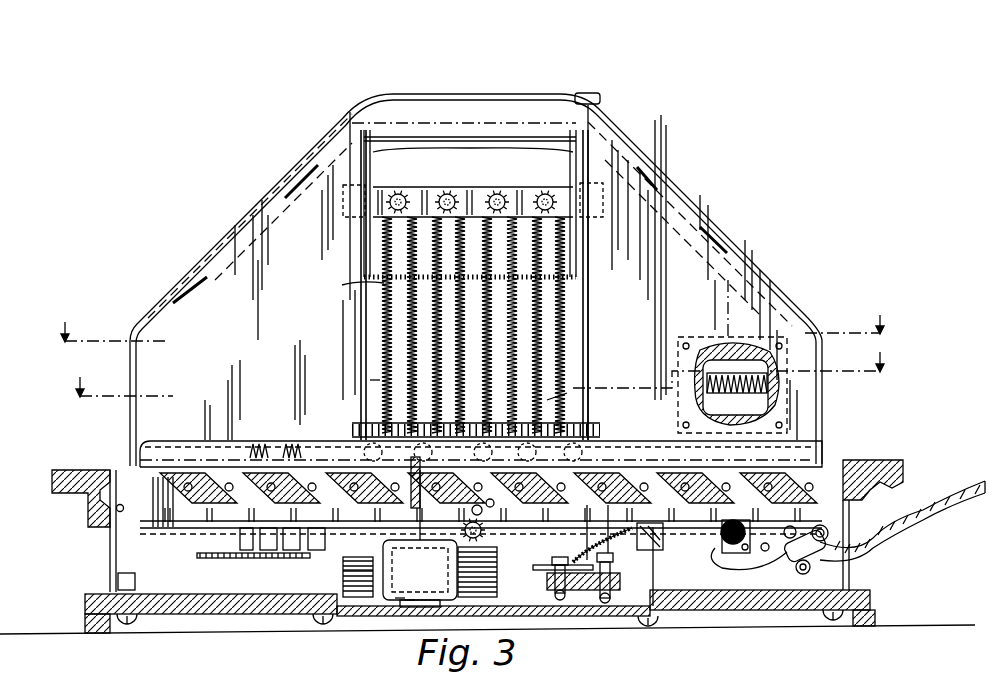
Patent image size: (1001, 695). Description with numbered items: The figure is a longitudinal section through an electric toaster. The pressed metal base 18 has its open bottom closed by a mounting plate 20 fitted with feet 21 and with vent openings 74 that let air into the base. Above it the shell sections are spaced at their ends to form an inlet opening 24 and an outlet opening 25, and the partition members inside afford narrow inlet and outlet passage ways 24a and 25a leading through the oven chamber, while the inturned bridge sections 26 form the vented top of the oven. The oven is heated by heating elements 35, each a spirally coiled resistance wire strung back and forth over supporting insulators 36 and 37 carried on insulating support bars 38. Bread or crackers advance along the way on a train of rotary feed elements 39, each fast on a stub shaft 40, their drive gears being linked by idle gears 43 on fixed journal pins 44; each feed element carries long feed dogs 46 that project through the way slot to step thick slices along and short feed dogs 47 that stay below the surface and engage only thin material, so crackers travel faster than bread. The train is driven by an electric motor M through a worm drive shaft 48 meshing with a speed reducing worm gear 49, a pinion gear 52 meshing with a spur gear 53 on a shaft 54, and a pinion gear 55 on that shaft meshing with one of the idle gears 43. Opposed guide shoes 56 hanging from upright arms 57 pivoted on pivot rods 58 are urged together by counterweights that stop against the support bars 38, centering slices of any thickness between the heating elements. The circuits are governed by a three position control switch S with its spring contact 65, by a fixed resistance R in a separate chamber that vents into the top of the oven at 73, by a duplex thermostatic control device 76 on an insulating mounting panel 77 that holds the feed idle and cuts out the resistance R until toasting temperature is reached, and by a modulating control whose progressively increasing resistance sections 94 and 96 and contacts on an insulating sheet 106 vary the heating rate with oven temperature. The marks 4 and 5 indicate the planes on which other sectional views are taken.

The base 18 is at (110, 547).
The mounting plate 20 is at (90, 607).
The feet 21 is at (85, 622).
The inlet opening 24 is at (667, 158).
The inlet passage way 24a is at (660, 197).
The outlet opening 25 is at (254, 184).
The outlet passage way 25a is at (300, 172).
The bridge sections 26 is at (489, 94).
The vent 73 is at (578, 100).
The heating elements 35 is at (410, 307).
The supporting insulators 36 is at (403, 191).
The supporting insulators 37 is at (547, 400).
The support bars 38 is at (366, 216).
The rotary feed elements 39 is at (795, 485).
The stub shafts 40 is at (771, 485).
The idle gears 43 is at (707, 457).
The journal pins 44 is at (495, 415).
The long feed dogs 46 is at (156, 472).
The short feed dogs 47 is at (603, 500).
The worm drive shaft 48 is at (372, 578).
The worm gear 49 is at (477, 417).
The pinion gear 52 is at (383, 380).
The spur gear 53 is at (500, 532).
The shaft 54 is at (408, 605).
The pinion gear 55 is at (395, 600).
The guide shoes 56 is at (350, 283).
The upright arms 57 is at (369, 178).
The pivot rods 58 is at (481, 142).
The spring contact 65 is at (650, 520).
The vent openings 74 is at (585, 607).
The duplex control device 76 is at (539, 561).
The mounting panel 77 is at (567, 582).
The resistance section 94 is at (290, 447).
The resistance section 96 is at (252, 447).
The insulating sheet 106 is at (213, 558).
The electric motor M is at (363, 582).
The control switch S is at (735, 553).
The fixed resistance R is at (734, 405).
The section line 4- 4 is at (472, 335).
The section line 5- 5 is at (478, 382).